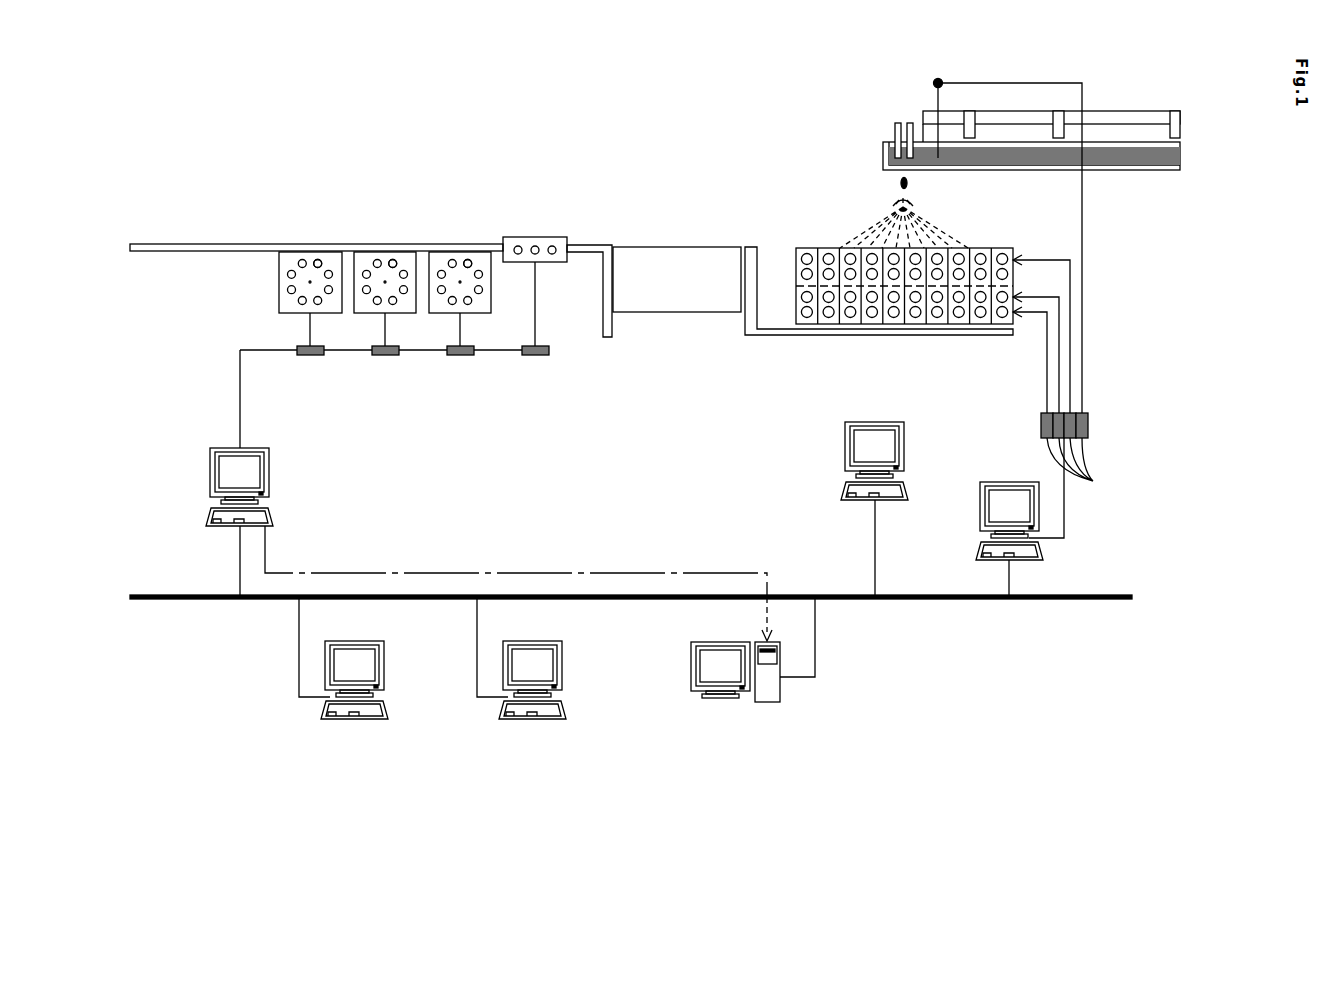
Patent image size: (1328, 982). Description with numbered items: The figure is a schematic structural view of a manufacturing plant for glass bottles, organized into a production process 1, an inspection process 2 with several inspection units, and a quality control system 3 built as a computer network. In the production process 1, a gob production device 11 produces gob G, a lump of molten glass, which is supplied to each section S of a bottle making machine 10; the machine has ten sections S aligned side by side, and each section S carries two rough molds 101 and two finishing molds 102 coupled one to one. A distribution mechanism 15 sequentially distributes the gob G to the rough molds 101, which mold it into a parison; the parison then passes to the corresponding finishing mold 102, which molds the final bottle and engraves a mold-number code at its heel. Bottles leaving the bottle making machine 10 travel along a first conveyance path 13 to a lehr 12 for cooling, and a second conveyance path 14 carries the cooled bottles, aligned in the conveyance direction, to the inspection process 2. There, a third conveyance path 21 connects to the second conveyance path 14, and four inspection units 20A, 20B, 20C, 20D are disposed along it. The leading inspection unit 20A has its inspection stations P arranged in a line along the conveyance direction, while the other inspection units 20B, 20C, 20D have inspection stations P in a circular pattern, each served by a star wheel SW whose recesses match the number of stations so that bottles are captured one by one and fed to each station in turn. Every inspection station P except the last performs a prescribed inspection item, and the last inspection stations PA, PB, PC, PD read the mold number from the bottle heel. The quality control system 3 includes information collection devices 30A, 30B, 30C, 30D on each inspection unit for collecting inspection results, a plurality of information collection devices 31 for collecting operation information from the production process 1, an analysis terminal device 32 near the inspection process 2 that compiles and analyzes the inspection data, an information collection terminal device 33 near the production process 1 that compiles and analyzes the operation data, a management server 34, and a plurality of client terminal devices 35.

The production process 1 is at (889, 94).
The inspection process 2 is at (417, 136).
The quality control system 3 is at (234, 653).
The bottle making machine 10 is at (820, 244).
The gob production device 11 is at (1130, 110).
The lehr 12 is at (710, 246).
The first conveyance path 13 is at (940, 337).
The second conveyance path 14 is at (607, 246).
The distribution mechanism 15 is at (945, 222).
The inspection unit 20A is at (559, 234).
The inspection unit 20B is at (478, 259).
The inspection unit 20C is at (403, 259).
The inspection unit 20D is at (328, 259).
The third conveyance path 21 is at (213, 244).
The information collection device 30A is at (535, 357).
The information collection device 30B is at (460, 357).
The information collection device 30C is at (385, 357).
The information collection device 30D is at (310, 357).
The information collection devices 31 is at (1059, 380).
The analysis terminal device 32 is at (270, 469).
The information collection terminal device 33 is at (992, 481).
The management server 34 is at (781, 689).
The client terminal devices 35 is at (860, 421).
The rough mold 101 is at (799, 274).
The finishing mold 102 is at (799, 297).
The gob G is at (909, 184).
The section S is at (1008, 254).
The inspection station P is at (317, 261).
The last inspection station PA is at (518, 246).
The last inspection station PB is at (452, 262).
The last inspection station PC is at (377, 262).
The last inspection station PD is at (302, 262).
The star wheel SW is at (317, 292).